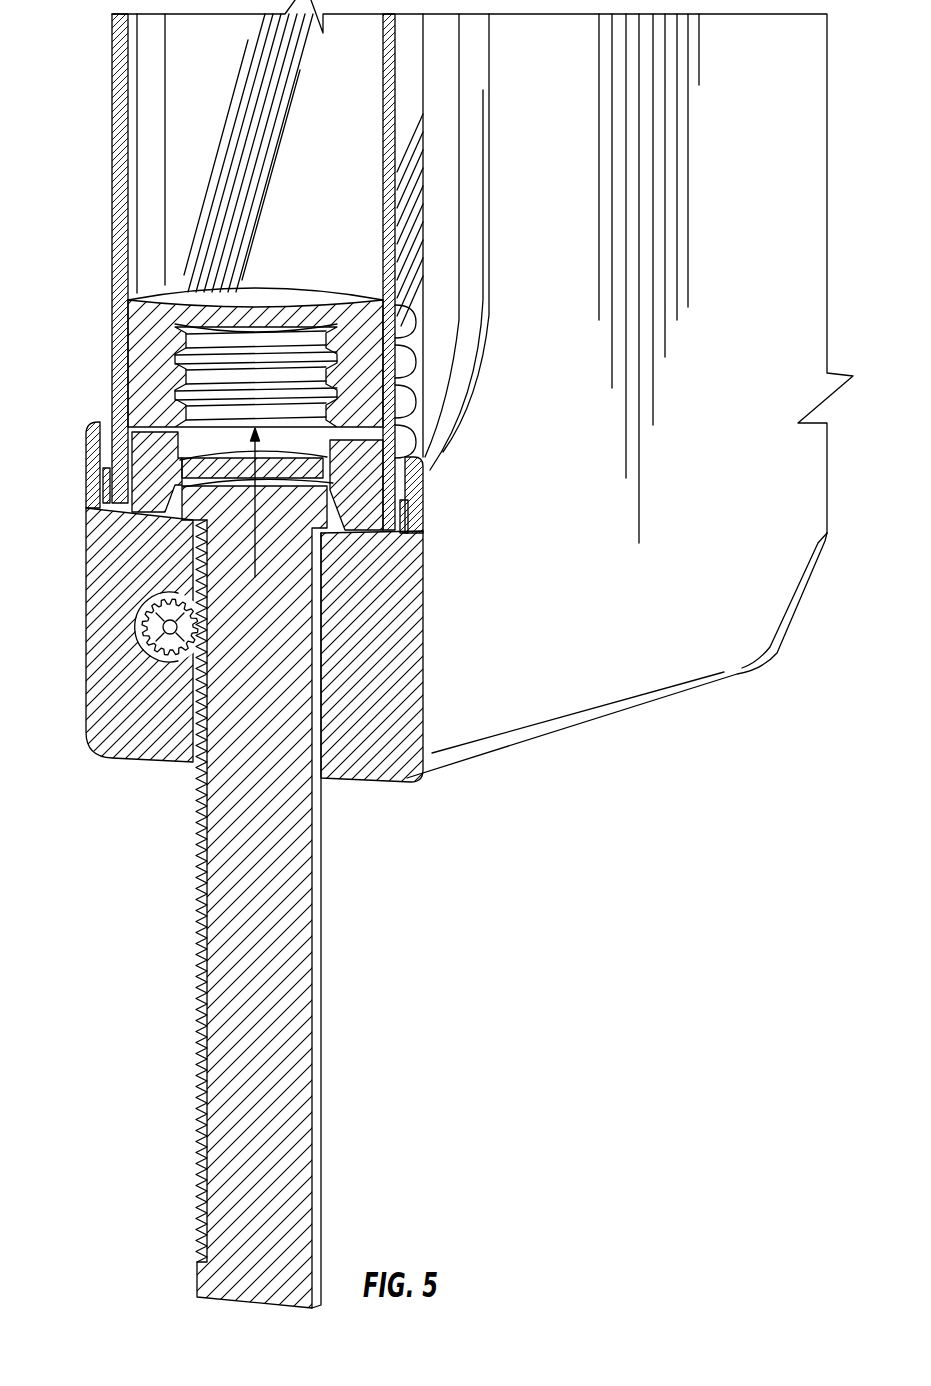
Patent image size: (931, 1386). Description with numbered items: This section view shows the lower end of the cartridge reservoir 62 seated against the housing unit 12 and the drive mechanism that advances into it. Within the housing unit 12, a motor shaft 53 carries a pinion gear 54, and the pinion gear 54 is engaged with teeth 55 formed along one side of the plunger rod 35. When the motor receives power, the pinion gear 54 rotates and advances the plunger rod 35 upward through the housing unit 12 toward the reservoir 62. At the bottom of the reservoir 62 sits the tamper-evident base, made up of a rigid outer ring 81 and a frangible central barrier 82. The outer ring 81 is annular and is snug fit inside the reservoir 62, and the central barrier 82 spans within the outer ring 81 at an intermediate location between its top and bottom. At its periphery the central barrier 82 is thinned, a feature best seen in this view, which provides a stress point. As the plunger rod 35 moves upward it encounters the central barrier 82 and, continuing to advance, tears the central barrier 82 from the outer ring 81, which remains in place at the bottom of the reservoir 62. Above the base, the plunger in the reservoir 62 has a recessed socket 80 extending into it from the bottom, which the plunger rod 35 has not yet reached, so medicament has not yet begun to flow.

The housing unit 12 is at (720, 682).
The plunger rod 35 is at (321, 966).
The shaft 53 is at (162, 631).
The pinion gear 54 is at (165, 672).
The teeth 55 is at (197, 1000).
The reservoir 62 is at (108, 137).
The recessed socket 80 is at (200, 413).
The outer ring 81 is at (143, 447).
The central barrier 82 is at (290, 436).